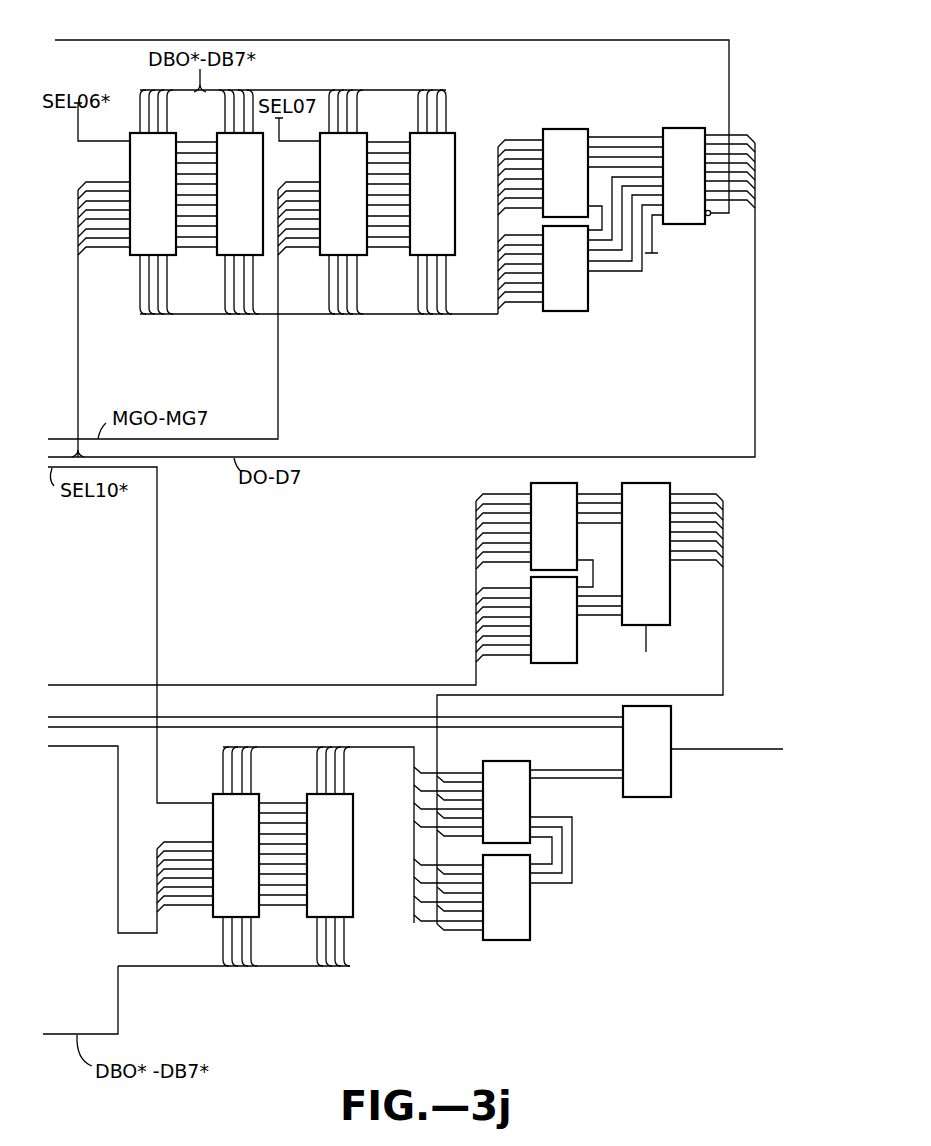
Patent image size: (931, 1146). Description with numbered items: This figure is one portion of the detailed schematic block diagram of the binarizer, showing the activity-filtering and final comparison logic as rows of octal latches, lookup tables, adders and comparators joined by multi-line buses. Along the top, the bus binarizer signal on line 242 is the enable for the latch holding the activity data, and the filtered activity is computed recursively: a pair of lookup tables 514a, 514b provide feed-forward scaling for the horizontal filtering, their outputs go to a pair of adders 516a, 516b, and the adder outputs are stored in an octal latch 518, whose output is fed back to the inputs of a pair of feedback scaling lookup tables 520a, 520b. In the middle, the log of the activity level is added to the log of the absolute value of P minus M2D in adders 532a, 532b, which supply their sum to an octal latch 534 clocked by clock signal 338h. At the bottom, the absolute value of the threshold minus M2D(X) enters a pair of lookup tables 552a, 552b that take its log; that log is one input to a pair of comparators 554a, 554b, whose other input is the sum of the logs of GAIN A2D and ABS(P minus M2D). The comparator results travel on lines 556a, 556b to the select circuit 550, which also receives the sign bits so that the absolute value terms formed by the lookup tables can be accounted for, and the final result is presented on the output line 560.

The bus binarizer signal line 242 is at (100, 40).
The feedback scaling lookup table 520a is at (153, 194).
The feedback scaling lookup table 520b is at (240, 194).
The lookup table 514a is at (343, 194).
The lookup table 514b is at (432, 194).
The adder 516a is at (565, 173).
The adder 516b is at (565, 268).
The octal latch 518 is at (684, 176).
The adder 532a is at (554, 526).
The adder 532b is at (554, 620).
The octal latch 534 is at (646, 554).
The clock signal 338h is at (650, 652).
The select circuit 550 is at (672, 731).
The output line 560 is at (716, 752).
The comparator output line 556a is at (550, 770).
The comparator output line 556b is at (545, 779).
The comparator 554a is at (506, 802).
The comparator 554b is at (506, 897).
The lookup table 552a is at (236, 855).
The lookup table 552b is at (330, 855).